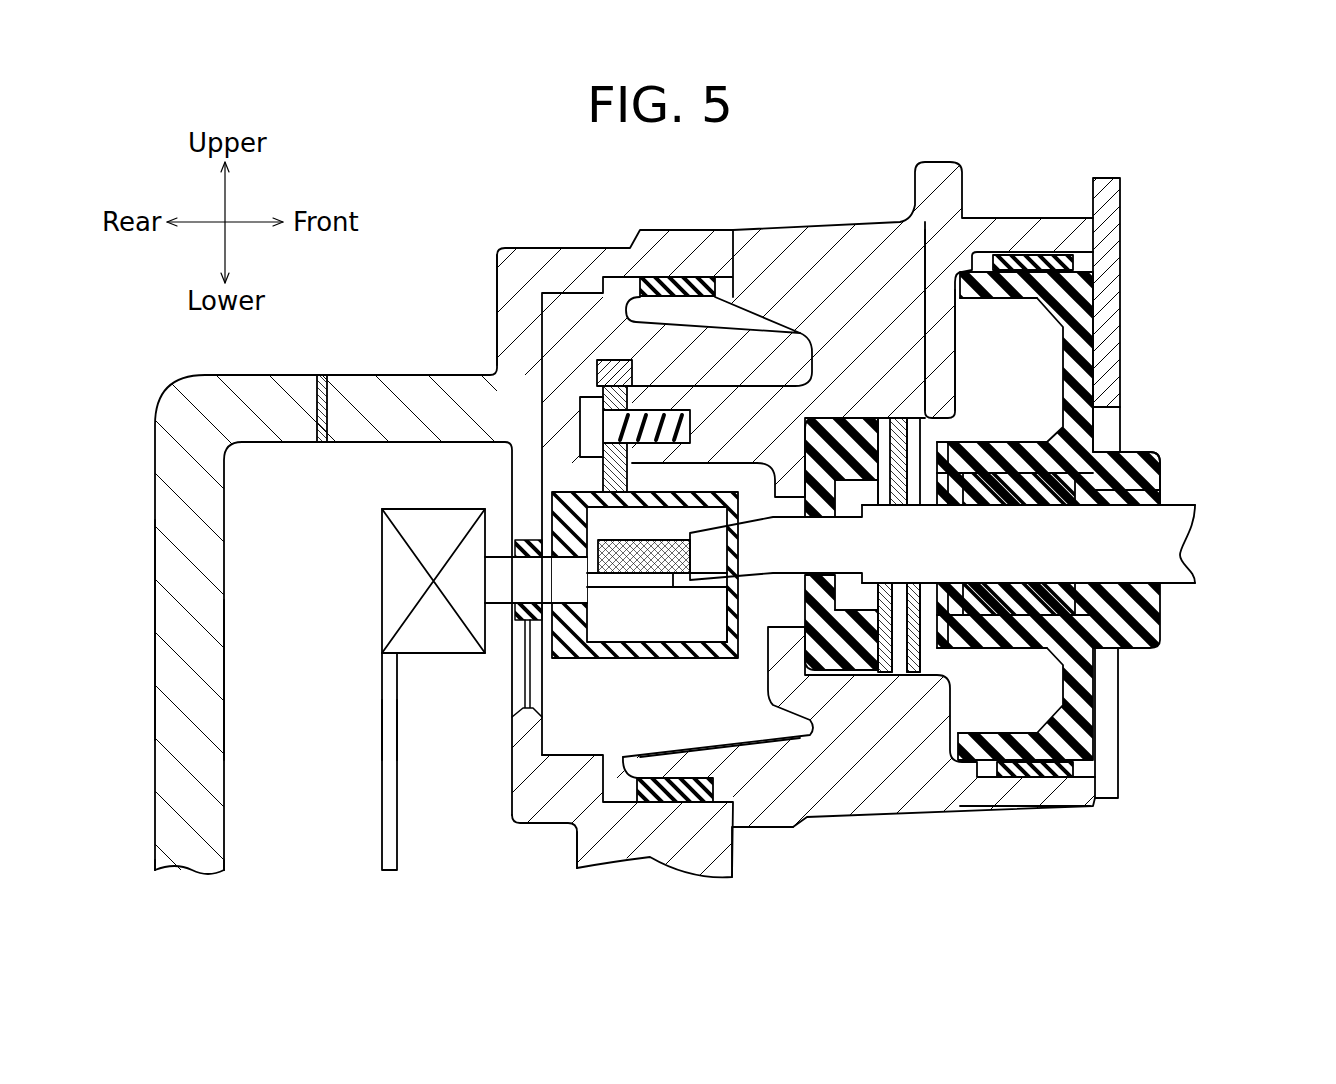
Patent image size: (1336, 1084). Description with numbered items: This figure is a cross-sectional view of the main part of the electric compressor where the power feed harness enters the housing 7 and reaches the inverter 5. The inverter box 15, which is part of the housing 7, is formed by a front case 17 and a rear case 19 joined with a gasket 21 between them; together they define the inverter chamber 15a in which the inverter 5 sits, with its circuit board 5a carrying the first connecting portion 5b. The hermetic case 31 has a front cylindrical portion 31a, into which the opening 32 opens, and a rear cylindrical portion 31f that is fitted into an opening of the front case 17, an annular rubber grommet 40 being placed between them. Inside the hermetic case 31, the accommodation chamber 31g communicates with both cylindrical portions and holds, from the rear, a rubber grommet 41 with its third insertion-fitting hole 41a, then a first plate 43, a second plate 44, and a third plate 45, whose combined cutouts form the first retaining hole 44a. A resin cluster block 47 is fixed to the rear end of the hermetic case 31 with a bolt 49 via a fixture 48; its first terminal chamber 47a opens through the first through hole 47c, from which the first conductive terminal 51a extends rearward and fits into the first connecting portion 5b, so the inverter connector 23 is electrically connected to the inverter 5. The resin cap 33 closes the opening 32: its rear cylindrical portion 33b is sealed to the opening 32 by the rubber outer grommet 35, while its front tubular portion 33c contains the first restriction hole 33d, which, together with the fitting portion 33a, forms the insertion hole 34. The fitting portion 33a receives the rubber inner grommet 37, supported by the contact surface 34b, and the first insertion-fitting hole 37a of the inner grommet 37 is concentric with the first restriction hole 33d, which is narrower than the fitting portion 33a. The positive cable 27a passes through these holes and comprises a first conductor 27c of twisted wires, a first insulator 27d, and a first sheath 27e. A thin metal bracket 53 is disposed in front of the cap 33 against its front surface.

The inverter 5 is at (383, 805).
The circuit board 5a is at (398, 722).
The first connecting portion 5b is at (400, 570).
The housing 7 is at (153, 636).
The inverter box 15 is at (190, 398).
The inverter chamber 15a is at (226, 690).
The front case 17 is at (650, 856).
The rear case 19 is at (193, 868).
The gasket 21 is at (327, 375).
The inverter connector 23 is at (810, 827).
The positive cable 27a is at (1158, 544).
The first conductor 27c is at (617, 548).
The first insulator 27d is at (805, 560).
The first sheath 27e is at (1172, 582).
The hermetic case 31 is at (835, 248).
The front cylindrical portion 31a is at (1030, 808).
The rear cylindrical portion 31f is at (672, 775).
The accommodation chamber 31g is at (911, 412).
The opening 32 is at (1090, 285).
The cap 33 is at (1080, 357).
The fitting portion 33a is at (1008, 622).
The rear cylindrical portion 33b is at (1020, 735).
The front tubular portion 33c is at (1152, 468).
The first restriction hole 33d is at (1130, 502).
The insertion hole 34 is at (1062, 455).
The contact surface 34b is at (1100, 660).
The outer grommet 35 is at (1033, 262).
The inner grommet 37 is at (1015, 472).
The first insertion-fitting hole 37a is at (1015, 583).
The grommet 40 is at (677, 290).
The grommet 41 is at (846, 417).
The third insertion-fitting hole 41a is at (858, 545).
The first plate 43 is at (850, 675).
The second plate 44 is at (895, 675).
The first retaining hole 44a is at (920, 506).
The third plate 45 is at (917, 675).
The cluster block 47 is at (582, 652).
The first terminal chamber 47a is at (710, 656).
The first through hole 47c is at (518, 548).
The fixture 48 is at (634, 395).
The bolt 49 is at (592, 430).
The first conductive terminal 51a is at (578, 592).
The bracket 53 is at (1115, 232).